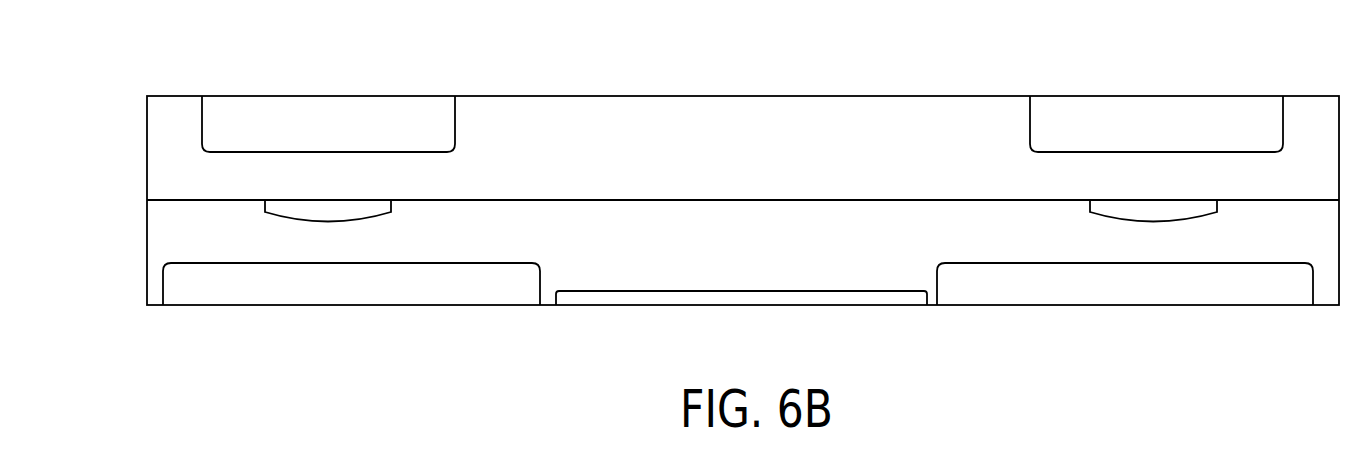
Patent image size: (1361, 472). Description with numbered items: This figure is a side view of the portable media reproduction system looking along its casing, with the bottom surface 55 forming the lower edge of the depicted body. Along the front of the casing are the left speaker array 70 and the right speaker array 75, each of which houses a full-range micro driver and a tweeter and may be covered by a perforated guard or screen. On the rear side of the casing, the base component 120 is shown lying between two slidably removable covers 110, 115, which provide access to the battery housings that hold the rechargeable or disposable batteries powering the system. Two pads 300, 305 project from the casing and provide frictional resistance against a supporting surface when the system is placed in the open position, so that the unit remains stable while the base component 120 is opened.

The bottom surface 55 is at (737, 113).
The left speaker array 70 is at (337, 113).
The right speaker array 75 is at (1156, 114).
The pad 300 is at (329, 213).
The pad 305 is at (1152, 213).
The slidably removable cover 115 is at (405, 287).
The base component 120 is at (607, 297).
The slidably removable cover 110 is at (1057, 292).